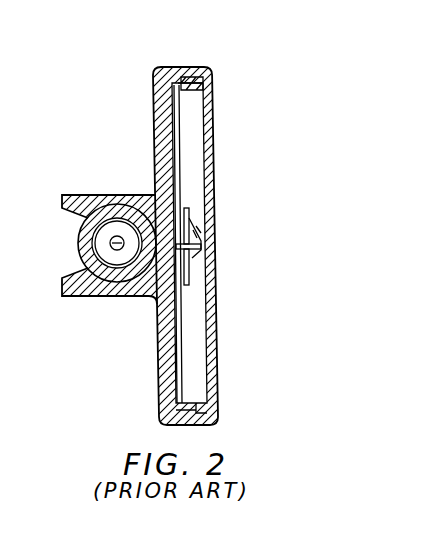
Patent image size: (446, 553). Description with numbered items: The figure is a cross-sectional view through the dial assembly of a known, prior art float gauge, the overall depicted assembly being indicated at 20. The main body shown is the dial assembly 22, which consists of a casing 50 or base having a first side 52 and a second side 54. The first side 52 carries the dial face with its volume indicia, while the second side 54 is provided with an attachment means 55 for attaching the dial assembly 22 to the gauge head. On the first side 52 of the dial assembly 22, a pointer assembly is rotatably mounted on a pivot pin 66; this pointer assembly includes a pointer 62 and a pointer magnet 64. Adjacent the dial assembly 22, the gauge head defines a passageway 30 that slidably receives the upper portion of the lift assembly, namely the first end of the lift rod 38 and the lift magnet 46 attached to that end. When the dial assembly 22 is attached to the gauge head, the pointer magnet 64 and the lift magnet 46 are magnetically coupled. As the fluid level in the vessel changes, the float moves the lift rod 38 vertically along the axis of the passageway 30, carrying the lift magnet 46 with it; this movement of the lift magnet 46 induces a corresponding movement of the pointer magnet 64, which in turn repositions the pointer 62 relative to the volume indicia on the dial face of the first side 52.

The prior art hinge assembly 20 is at (271, 166).
The dial assembly 22 is at (172, 67).
The passageway 30 is at (98, 261).
The lift rod 38 is at (106, 242).
The lift magnet 46 is at (112, 264).
The casing 50 is at (214, 103).
The first side 52 is at (204, 139).
The second side 54 is at (158, 358).
The attachment means 55 is at (77, 298).
The pointer 62 is at (193, 226).
The pointer magnet 64 is at (197, 268).
The pivot pin 66 is at (203, 245).